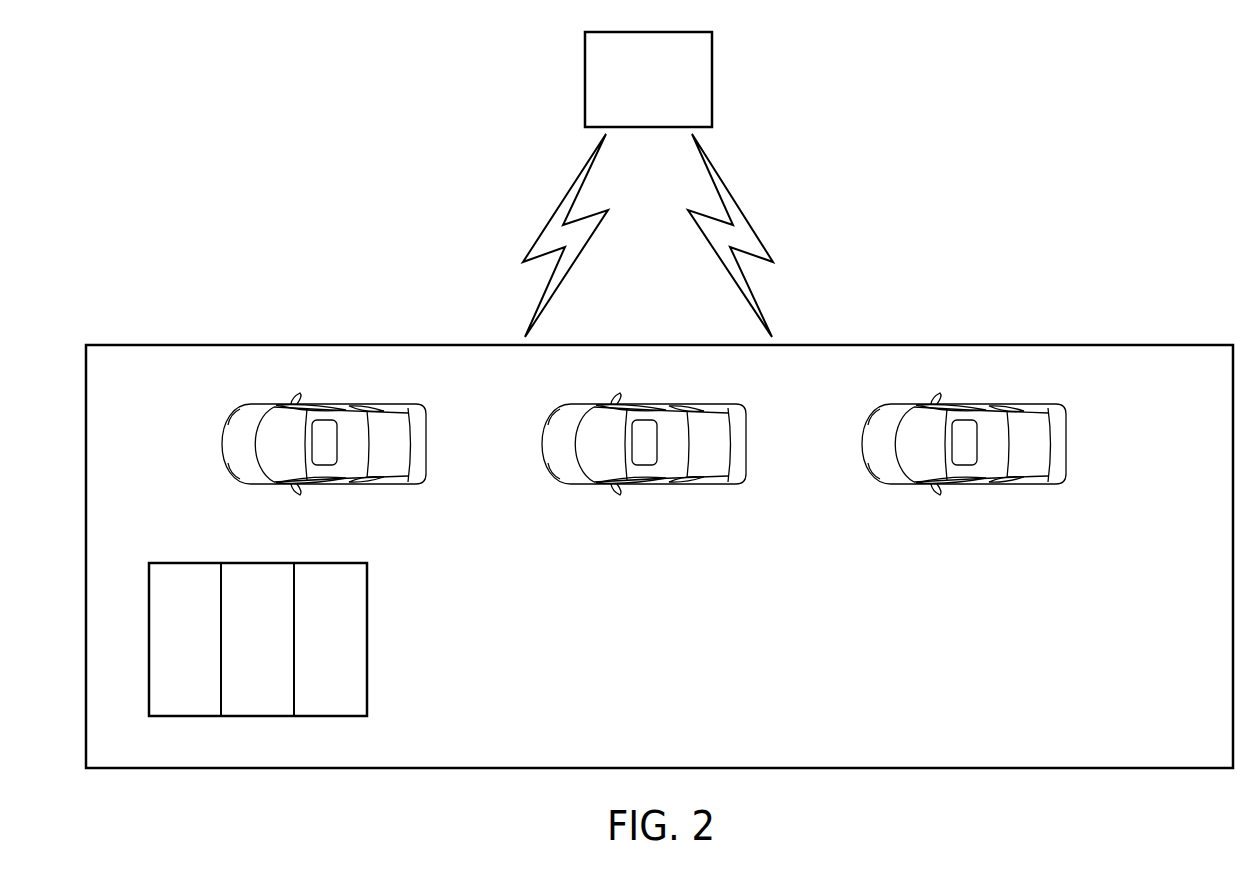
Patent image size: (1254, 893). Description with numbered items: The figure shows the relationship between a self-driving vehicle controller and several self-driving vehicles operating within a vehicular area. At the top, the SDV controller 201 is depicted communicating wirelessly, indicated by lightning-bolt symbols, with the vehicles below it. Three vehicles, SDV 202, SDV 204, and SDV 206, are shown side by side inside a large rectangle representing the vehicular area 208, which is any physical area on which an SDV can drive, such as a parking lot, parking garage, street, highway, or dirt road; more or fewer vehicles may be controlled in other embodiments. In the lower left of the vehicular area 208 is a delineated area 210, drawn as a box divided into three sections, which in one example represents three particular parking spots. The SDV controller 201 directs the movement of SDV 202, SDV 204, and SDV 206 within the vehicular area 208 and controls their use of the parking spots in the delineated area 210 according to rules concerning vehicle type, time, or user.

The self-driving vehicle (SDV) controller 201 is at (712, 78).
The SDV 202 is at (392, 485).
The SDV 204 is at (646, 468).
The SDV 206 is at (966, 468).
The vehicular area 208 is at (635, 751).
The delineated area 210 is at (367, 644).